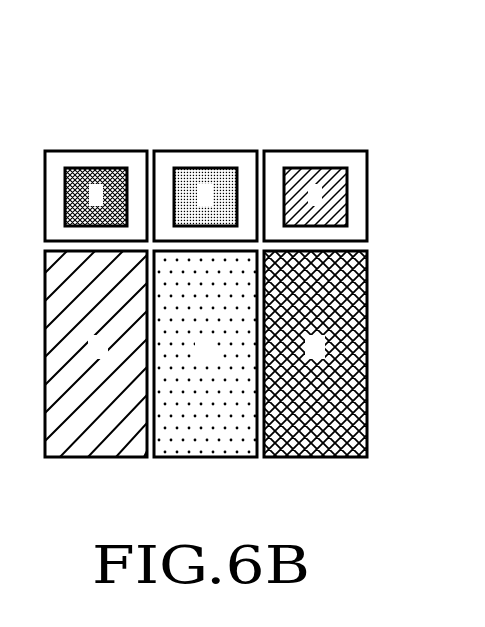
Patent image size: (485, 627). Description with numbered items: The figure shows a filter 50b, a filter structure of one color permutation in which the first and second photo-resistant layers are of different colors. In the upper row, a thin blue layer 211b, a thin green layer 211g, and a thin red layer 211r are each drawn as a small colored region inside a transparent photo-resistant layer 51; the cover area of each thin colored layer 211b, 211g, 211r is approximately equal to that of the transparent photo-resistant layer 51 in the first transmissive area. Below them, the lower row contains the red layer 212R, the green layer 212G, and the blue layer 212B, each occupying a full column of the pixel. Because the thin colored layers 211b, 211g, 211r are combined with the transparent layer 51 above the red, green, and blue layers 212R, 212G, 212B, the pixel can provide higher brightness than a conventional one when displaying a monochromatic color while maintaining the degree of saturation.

The filter 50b is at (295, 82).
The transparent photo-resistant layer 51 is at (45, 212).
The thin blue photo-resistant layer 211b is at (96, 168).
The thin green layer 211g is at (205, 168).
The thin red layer 211r is at (314, 168).
The red photo-resistant layer 212R is at (88, 458).
The green layer 212G is at (198, 458).
The blue layer 212B is at (305, 458).